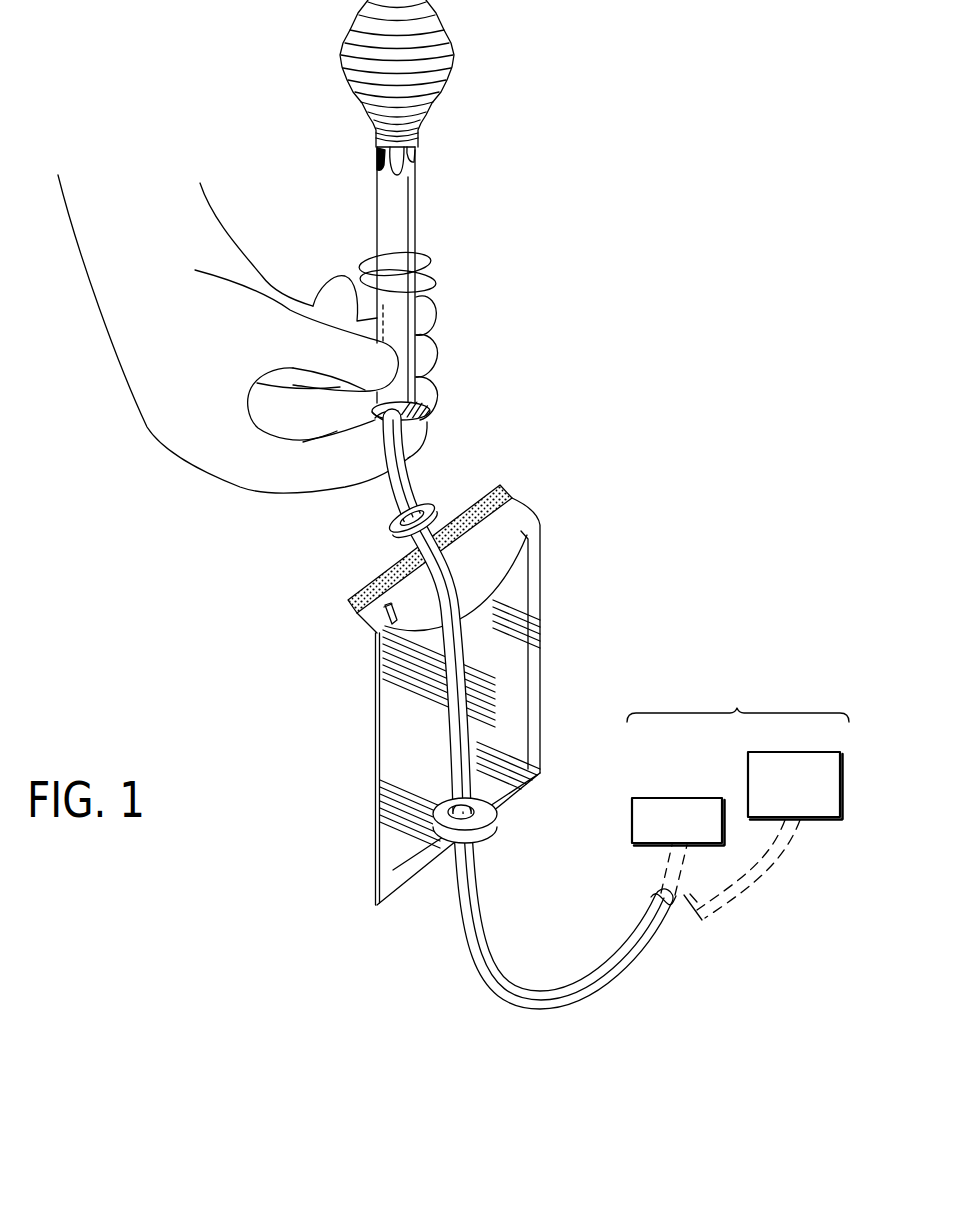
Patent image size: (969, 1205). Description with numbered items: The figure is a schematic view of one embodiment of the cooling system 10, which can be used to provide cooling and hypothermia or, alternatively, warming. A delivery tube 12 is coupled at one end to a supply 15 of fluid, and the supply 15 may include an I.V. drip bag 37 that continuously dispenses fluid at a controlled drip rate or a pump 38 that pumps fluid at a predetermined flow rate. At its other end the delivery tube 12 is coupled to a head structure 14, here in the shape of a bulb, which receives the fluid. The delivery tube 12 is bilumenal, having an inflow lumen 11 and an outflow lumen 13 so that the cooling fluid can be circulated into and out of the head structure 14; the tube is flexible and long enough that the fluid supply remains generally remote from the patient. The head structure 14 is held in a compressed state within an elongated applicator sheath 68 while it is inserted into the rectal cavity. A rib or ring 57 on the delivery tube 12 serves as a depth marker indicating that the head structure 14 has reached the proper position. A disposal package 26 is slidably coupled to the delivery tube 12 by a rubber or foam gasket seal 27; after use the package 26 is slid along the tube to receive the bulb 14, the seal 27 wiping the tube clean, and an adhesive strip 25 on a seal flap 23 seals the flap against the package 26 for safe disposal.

The cooling system 10 is at (738, 325).
The head structure 14 is at (462, 53).
The applicator sheath 68 is at (421, 222).
The ring 57 is at (425, 499).
The adhesive strip 25 is at (353, 605).
The seal flap 23 is at (380, 623).
The disposal package 26 is at (373, 751).
The gasket seal 27 is at (490, 782).
The inflow lumen 11 is at (557, 978).
The delivery tube 12 is at (493, 989).
The outflow lumen 13 is at (583, 990).
The supply 15 is at (770, 798).
The pump 38 is at (647, 798).
The I.V. drip bag 37 is at (843, 793).